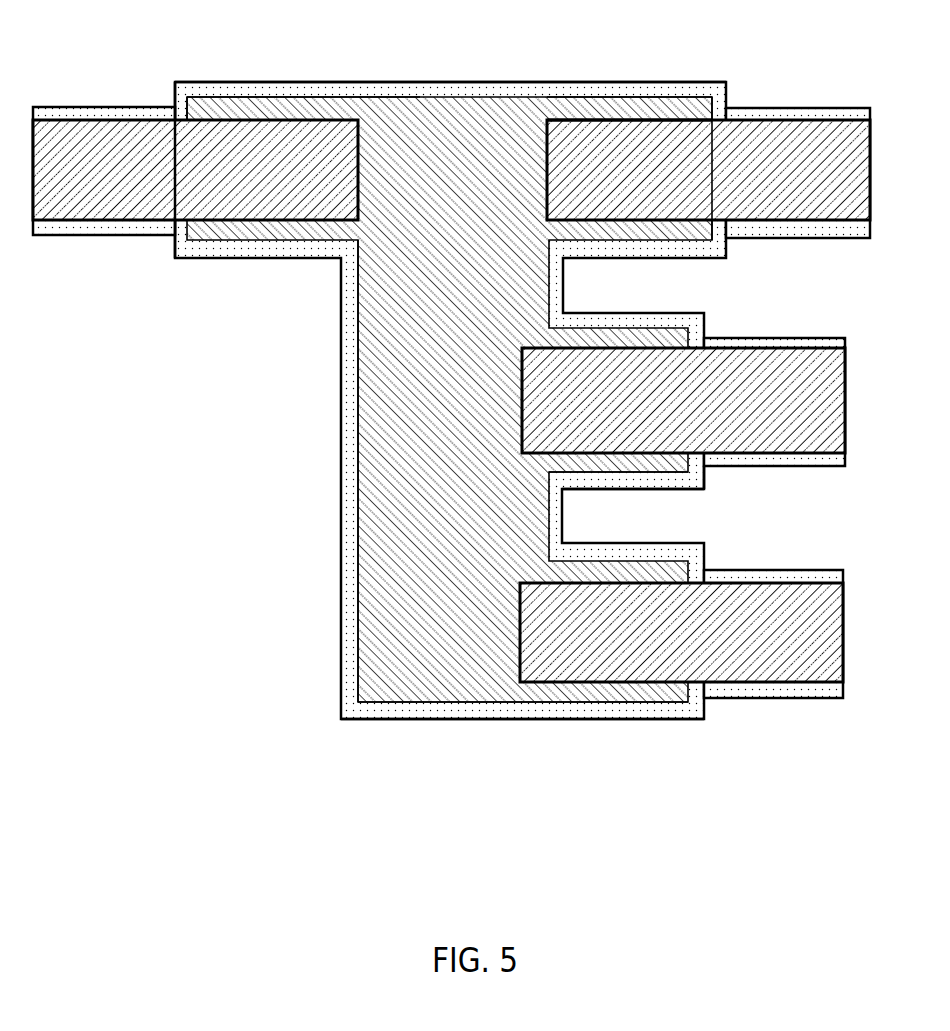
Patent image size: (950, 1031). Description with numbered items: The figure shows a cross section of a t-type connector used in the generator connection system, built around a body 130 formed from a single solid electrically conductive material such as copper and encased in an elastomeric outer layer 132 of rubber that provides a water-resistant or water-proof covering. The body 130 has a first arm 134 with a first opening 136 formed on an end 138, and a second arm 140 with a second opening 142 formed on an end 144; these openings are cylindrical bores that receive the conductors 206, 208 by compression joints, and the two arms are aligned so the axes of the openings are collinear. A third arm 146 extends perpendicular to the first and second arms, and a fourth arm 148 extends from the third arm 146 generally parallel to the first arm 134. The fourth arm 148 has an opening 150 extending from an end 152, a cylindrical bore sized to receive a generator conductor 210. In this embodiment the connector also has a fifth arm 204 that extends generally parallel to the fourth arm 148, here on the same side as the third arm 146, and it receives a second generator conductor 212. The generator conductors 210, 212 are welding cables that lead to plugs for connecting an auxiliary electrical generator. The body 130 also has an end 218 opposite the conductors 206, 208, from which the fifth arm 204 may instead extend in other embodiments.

The body 130 is at (473, 274).
The elastomeric outer layer 132 is at (459, 78).
The first arm 134 is at (595, 107).
The first opening 136 is at (662, 117).
The end 138 is at (717, 110).
The second arm 140 is at (324, 97).
The second opening 142 is at (232, 107).
The end 144 is at (185, 108).
The third arm 146 is at (407, 330).
The fourth arm 148 is at (637, 461).
The opening 150 is at (653, 453).
The end 152 is at (696, 472).
The fifth arm 204 is at (594, 690).
The conductor 206 is at (139, 186).
The conductor 208 is at (757, 186).
The generator conductor 210 is at (695, 416).
The generator conductor 212 is at (695, 642).
The end 218 is at (415, 720).